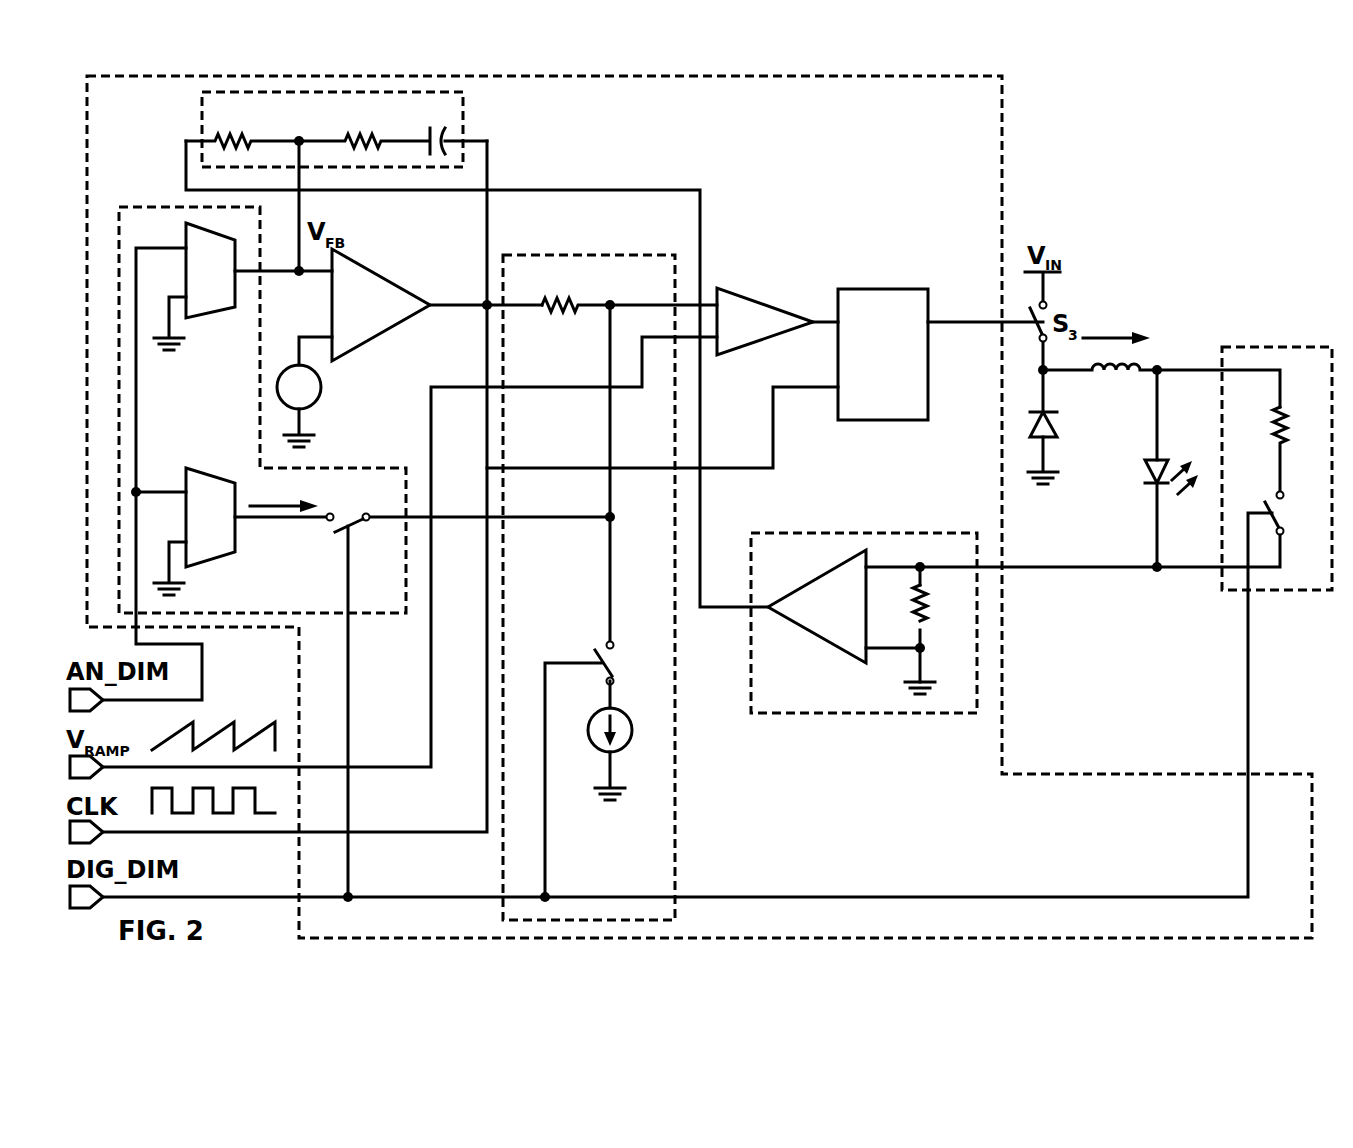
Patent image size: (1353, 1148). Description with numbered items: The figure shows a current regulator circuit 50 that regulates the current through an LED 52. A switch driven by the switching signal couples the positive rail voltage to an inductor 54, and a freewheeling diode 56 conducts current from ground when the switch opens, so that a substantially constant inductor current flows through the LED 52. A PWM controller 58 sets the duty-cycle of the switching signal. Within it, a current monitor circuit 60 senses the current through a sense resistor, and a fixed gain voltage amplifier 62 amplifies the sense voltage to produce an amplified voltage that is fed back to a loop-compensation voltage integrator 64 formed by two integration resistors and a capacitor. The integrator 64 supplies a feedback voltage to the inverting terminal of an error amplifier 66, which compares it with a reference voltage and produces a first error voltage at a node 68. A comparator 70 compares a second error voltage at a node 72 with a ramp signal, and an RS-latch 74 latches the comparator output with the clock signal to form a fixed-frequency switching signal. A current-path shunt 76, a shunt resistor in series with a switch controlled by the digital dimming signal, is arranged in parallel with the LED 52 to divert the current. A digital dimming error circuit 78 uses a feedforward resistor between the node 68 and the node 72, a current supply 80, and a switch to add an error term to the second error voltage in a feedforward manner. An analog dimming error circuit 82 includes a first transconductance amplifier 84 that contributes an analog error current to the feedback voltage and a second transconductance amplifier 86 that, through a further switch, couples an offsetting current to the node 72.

The current regulator circuit 50 is at (1255, 150).
The LED 52 is at (1143, 468).
The inductor 54 is at (1143, 357).
The freewheeling diode 56 is at (1053, 428).
The PWM controller 58 is at (1003, 157).
The current monitor circuit 60 is at (846, 606).
The fixed gain voltage amplifier 62 is at (838, 654).
The loop-compensation voltage integrator 64 is at (201, 125).
The error amplifier 66 is at (373, 266).
The node 68 is at (465, 335).
The comparator 70 is at (753, 298).
The node 72 is at (582, 334).
The RS-latch 74 is at (890, 289).
The current-path shunt 76 is at (1222, 595).
The digital dimming error circuit 78 is at (616, 572).
The current supply 80 is at (625, 750).
The analog dimming error circuit 82 is at (253, 535).
The first transconductance amplifier 84 is at (200, 317).
The second transconductance amplifier 86 is at (218, 557).